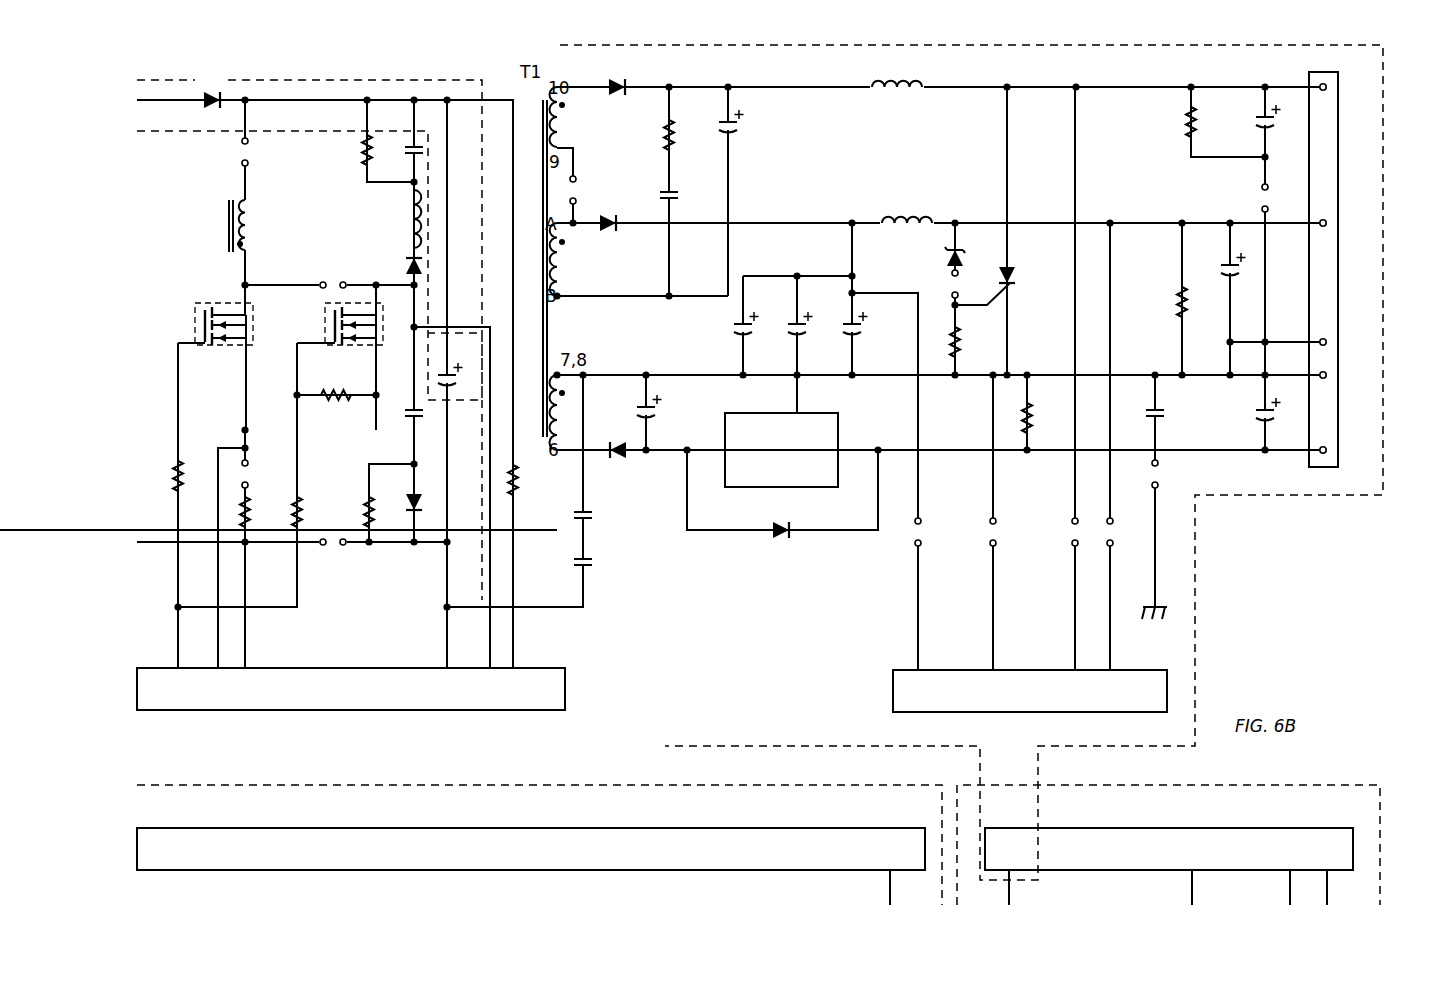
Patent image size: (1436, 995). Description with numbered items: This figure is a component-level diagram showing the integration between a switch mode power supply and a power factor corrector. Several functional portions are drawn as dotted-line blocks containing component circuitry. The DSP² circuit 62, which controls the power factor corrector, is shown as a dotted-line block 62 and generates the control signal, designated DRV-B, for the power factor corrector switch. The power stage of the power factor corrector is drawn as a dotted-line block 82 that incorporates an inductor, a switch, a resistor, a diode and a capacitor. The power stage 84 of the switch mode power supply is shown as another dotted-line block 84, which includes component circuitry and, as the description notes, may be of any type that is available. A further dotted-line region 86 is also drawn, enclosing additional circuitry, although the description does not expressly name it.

The DSP² circuit 62 is at (603, 785).
The power stage of the power factor corrector 82 is at (190, 131).
The power stage of the SMPS 84 is at (1383, 178).
The output connector section 86 is at (1380, 858).